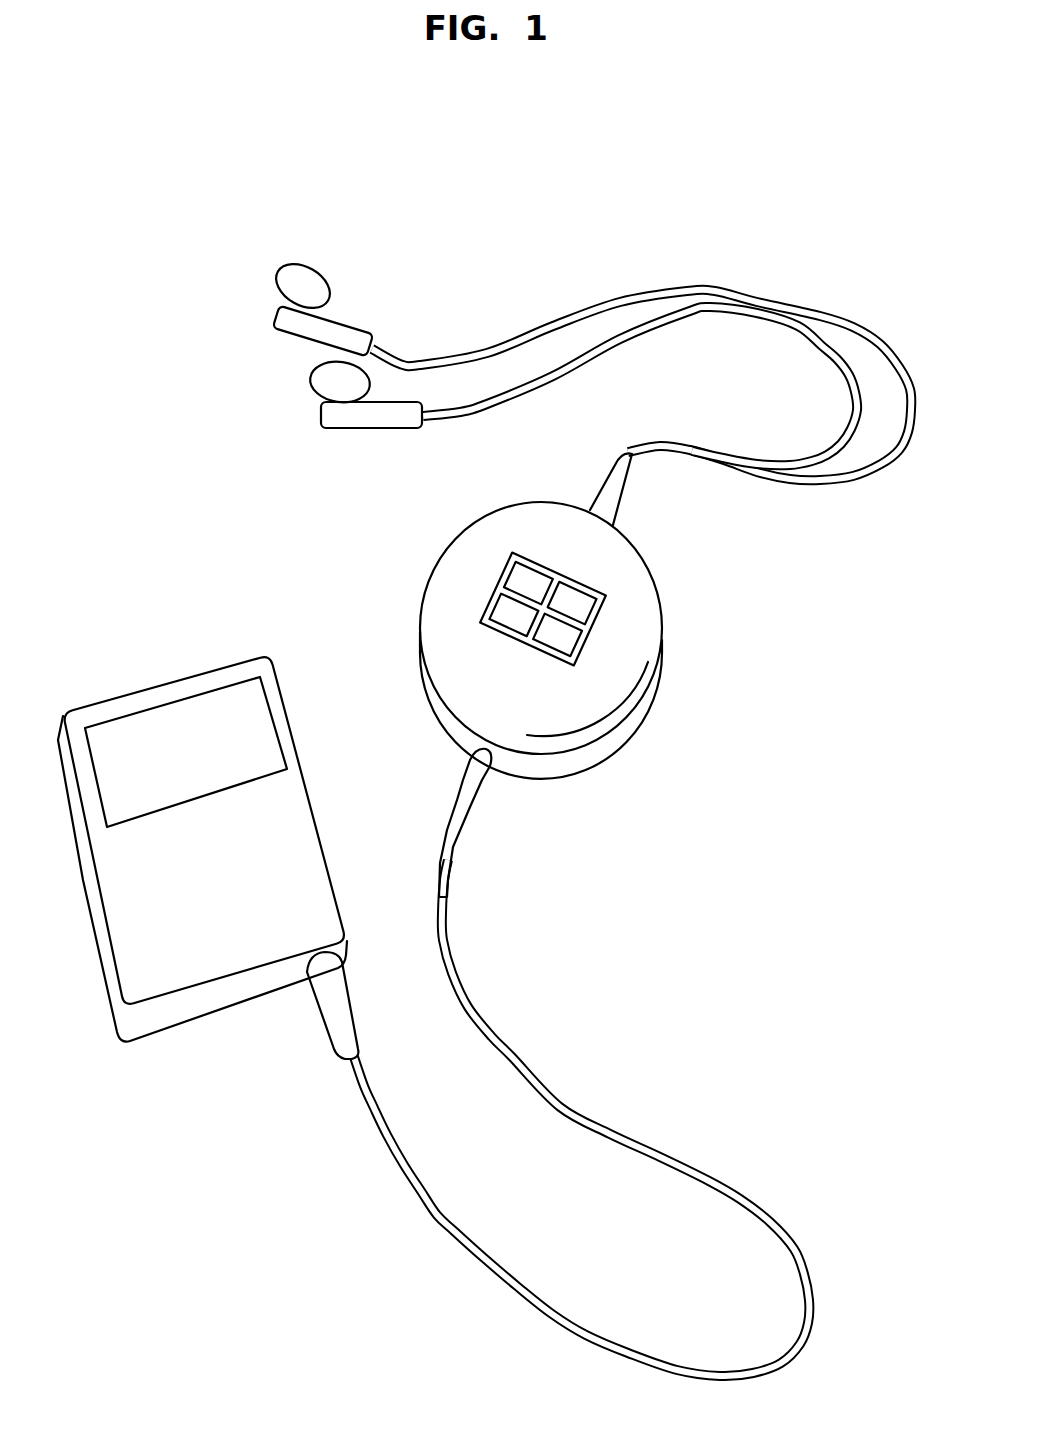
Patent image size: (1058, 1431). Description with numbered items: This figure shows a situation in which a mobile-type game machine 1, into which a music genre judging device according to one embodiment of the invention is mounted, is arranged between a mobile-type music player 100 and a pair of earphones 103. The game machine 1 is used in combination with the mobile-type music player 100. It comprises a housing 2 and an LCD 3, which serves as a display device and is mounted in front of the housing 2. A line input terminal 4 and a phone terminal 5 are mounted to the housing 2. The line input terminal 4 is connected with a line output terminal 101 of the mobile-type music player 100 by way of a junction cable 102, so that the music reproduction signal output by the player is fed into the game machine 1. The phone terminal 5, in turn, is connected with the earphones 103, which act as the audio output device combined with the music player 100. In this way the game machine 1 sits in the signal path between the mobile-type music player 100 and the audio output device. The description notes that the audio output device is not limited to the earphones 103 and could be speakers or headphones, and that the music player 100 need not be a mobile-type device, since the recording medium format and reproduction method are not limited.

The game machine 1 is at (567, 675).
The housing 2 is at (627, 665).
The LCD 3 is at (573, 603).
The line input terminal 4 is at (497, 770).
The phone terminal 5 is at (613, 525).
The mobile-type music player 100 is at (172, 690).
The line output terminal 101 is at (305, 973).
The junction cable 102 is at (610, 1127).
The earphones 103 is at (563, 318).